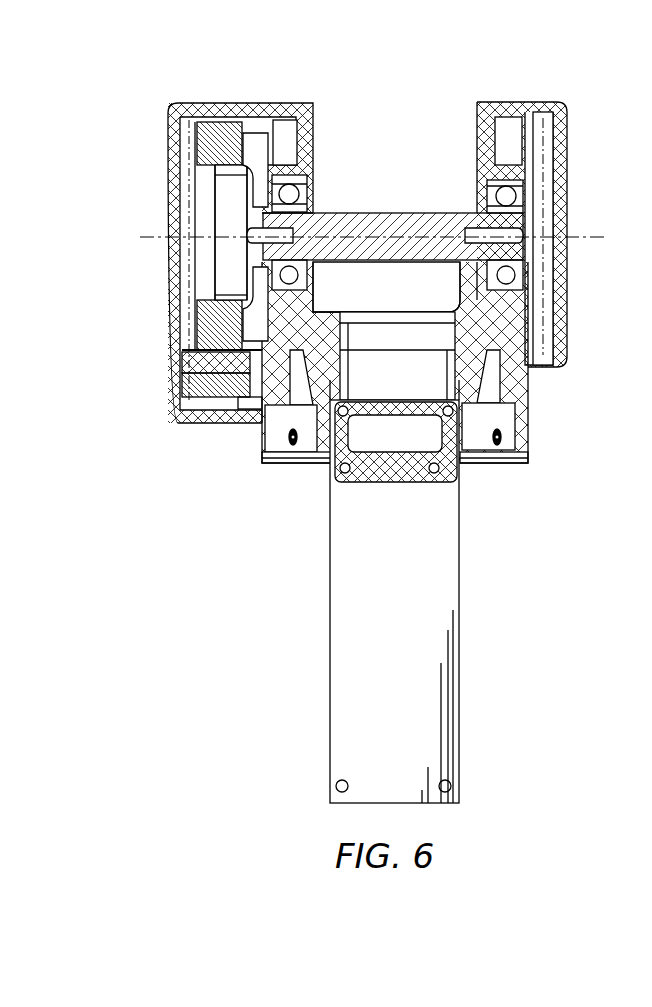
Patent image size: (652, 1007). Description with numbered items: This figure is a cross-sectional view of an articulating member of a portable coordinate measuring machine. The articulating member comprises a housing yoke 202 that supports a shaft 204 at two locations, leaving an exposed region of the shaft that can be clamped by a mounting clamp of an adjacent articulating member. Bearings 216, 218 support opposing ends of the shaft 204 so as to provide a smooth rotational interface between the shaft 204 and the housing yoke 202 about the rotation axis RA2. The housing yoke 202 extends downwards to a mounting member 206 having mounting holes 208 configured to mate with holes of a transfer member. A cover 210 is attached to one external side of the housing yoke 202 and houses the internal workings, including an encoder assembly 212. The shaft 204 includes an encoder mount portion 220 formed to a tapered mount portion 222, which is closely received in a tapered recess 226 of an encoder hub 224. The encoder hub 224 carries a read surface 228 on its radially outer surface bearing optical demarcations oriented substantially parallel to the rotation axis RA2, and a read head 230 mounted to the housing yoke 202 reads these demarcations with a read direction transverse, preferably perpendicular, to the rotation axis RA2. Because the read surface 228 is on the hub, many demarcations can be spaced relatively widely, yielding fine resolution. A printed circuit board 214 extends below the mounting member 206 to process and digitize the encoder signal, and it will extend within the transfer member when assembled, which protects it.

The housing yoke 202 is at (528, 386).
The shaft 204 is at (437, 212).
The mounting member 206 is at (477, 465).
The mounting holes 208 is at (291, 446).
The cover 210 is at (172, 320).
The encoder assembly 212 is at (182, 345).
The printed circuit board 214 is at (342, 668).
The bearing 216 is at (313, 135).
The bearing 218 is at (477, 178).
The encoder mount portion 220 is at (243, 292).
The tapered mount portion 222 is at (249, 308).
The encoder hub 224 is at (197, 152).
The tapered recess 226 is at (254, 138).
The read surface 228 is at (208, 103).
The read head 230 is at (170, 417).
The rotation axis RA2 is at (586, 236).